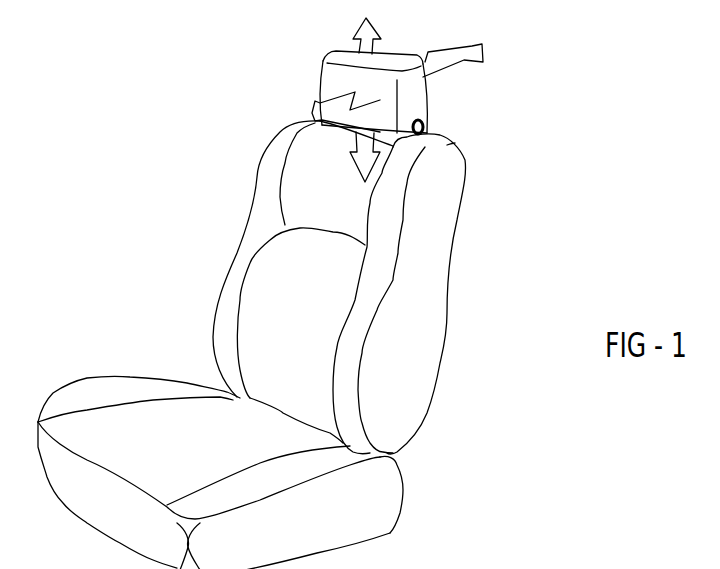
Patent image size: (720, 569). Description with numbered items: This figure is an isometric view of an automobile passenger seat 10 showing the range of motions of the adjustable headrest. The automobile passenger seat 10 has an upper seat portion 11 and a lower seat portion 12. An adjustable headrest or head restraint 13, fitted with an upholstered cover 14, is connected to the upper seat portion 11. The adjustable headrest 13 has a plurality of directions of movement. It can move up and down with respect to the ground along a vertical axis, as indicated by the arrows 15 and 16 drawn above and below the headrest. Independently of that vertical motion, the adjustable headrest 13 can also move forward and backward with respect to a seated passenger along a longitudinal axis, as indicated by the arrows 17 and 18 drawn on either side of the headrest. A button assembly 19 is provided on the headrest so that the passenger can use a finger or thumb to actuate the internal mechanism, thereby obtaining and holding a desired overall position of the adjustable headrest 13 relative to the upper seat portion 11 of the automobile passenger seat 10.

The automobile passenger seat 10 is at (166, 303).
The upper seat portion 11 is at (445, 223).
The lower seat portion 12 is at (111, 388).
The adjustable headrest 13 is at (315, 53).
The upholstered cover 14 is at (327, 75).
The arrow 15 is at (357, 30).
The arrow 16 is at (355, 160).
The arrow 17 is at (312, 109).
The arrow 18 is at (474, 44).
The button assembly 19 is at (417, 100).